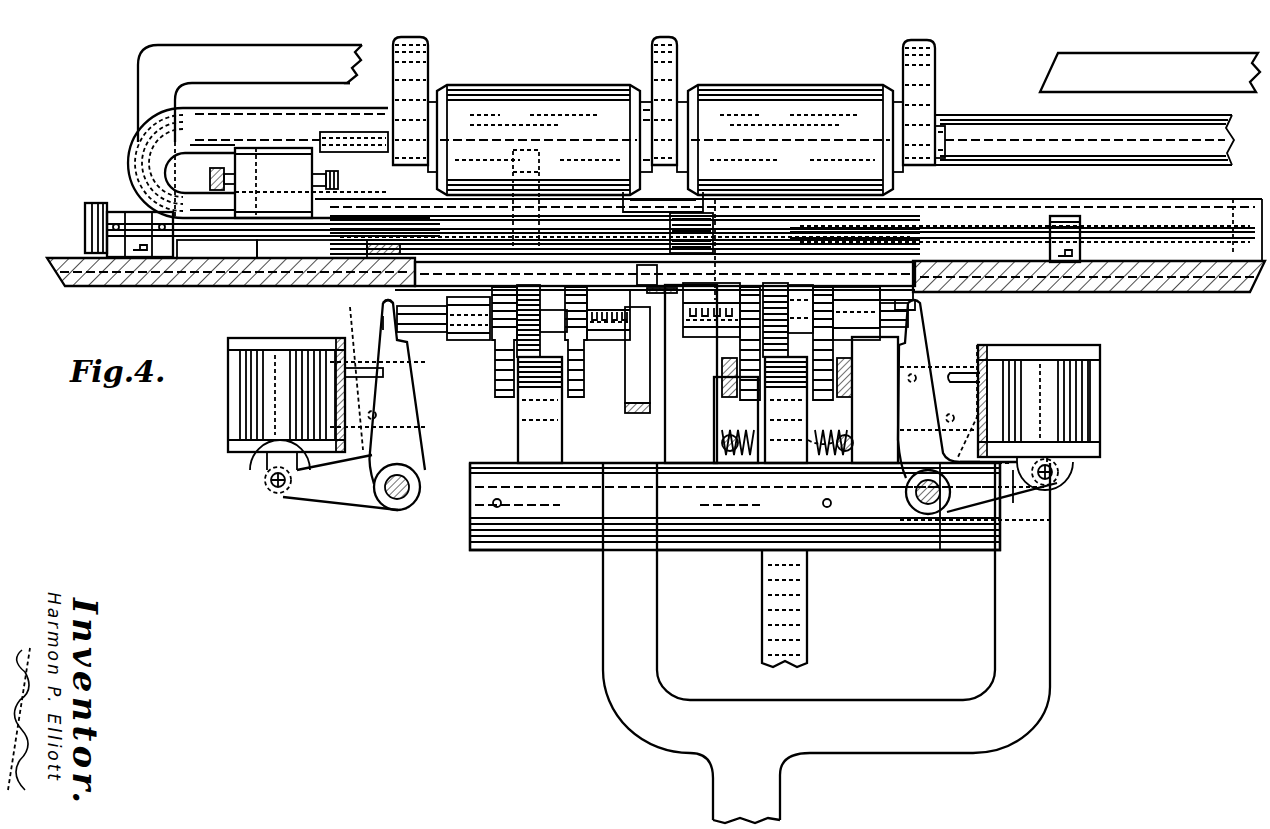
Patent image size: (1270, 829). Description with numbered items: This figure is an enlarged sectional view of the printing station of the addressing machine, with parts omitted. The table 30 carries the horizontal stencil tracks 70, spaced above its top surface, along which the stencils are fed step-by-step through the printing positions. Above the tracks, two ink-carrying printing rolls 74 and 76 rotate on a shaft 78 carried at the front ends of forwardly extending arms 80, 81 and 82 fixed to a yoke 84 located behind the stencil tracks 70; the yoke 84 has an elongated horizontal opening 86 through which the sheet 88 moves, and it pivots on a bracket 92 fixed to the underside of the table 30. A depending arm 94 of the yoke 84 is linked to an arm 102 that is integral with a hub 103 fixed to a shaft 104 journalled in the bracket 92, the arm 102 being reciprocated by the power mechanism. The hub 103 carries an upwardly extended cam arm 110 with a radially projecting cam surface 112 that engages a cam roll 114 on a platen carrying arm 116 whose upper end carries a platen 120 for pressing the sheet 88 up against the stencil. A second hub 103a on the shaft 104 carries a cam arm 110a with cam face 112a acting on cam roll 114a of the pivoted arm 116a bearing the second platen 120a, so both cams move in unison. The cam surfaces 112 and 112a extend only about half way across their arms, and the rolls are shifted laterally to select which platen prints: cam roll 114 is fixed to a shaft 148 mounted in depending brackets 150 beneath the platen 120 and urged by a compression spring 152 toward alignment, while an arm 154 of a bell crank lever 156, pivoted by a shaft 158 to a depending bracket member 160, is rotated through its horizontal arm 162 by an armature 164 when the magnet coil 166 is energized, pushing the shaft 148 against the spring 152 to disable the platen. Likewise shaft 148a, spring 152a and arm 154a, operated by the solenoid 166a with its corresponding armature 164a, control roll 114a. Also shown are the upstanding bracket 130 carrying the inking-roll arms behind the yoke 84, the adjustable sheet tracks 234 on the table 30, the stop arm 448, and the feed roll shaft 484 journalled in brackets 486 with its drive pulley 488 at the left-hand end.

The table 30 is at (195, 268).
The stencil tracks 70 is at (413, 230).
The printing roll 74 is at (778, 92).
The printing roll 76 is at (512, 92).
The shaft 78 is at (943, 138).
The arm 80 is at (938, 55).
The arm 81 is at (678, 38).
The arm 82 is at (430, 47).
The yoke 84 is at (260, 122).
The elongated horizontal opening 86 is at (347, 162).
The sheet 88 is at (450, 250).
The bracket 92 is at (672, 433).
The depending arm 94 is at (742, 420).
The arm 102 is at (800, 605).
The hub 103 is at (740, 552).
The hub 103a is at (538, 552).
The shaft 104 is at (641, 545).
The cam arm 110 is at (790, 430).
The cam arm 110a is at (530, 432).
The cam surface 112 is at (830, 362).
The cam face 112a is at (565, 352).
The cam roll 114 is at (775, 305).
The cam roll 114a is at (535, 307).
The platen carrying arm 116 is at (722, 378).
The pivoted arm 116a is at (497, 390).
The platen 120 is at (900, 272).
The platen 120a is at (445, 308).
The bracket 130 is at (280, 52).
The shaft 148 is at (900, 320).
The shaft 148a is at (385, 304).
The depending brackets 150 is at (920, 300).
The compression spring 152 is at (720, 340).
The compression spring 152a is at (620, 312).
The arm 154 is at (905, 328).
The arm 154a is at (383, 318).
The bell crank lever 156 is at (955, 548).
The shaft 158 is at (400, 505).
The depending bracket member 160 is at (373, 470).
The horizontal arm 162 is at (1013, 493).
The armature 164 is at (1075, 470).
The bolt 164a is at (278, 480).
The magnet coil 166 is at (1065, 408).
The solenoid 166a is at (262, 408).
The tracks 234 is at (367, 249).
The arm 448 is at (627, 400).
The shaft 484 is at (362, 228).
The brackets 486 is at (128, 212).
The pulley 488 is at (85, 220).